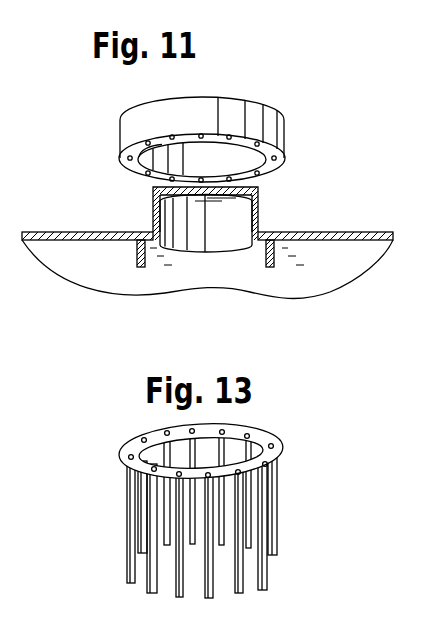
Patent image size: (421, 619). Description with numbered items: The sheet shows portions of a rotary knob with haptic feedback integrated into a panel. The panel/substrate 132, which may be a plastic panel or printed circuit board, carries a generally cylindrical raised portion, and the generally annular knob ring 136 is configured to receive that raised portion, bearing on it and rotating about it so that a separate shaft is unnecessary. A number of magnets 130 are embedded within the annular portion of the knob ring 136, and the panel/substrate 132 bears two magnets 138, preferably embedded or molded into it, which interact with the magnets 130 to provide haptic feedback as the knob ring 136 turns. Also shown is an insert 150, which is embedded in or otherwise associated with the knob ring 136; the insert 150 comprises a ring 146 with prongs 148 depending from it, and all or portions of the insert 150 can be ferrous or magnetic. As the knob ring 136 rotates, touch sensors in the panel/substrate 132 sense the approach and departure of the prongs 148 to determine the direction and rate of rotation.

In FIG. 11, the magnets 130 is at (168, 137).
In FIG. 11, the panel/substrate 132 is at (38, 232).
In FIG. 11, the knob ring 136 is at (185, 127).
In FIG. 11, the magnets 138 is at (138, 271).
In FIG. 13, the ring 146 is at (282, 449).
In FIG. 13, the prongs 148 is at (240, 596).
In FIG. 13, the insert 150 is at (195, 514).